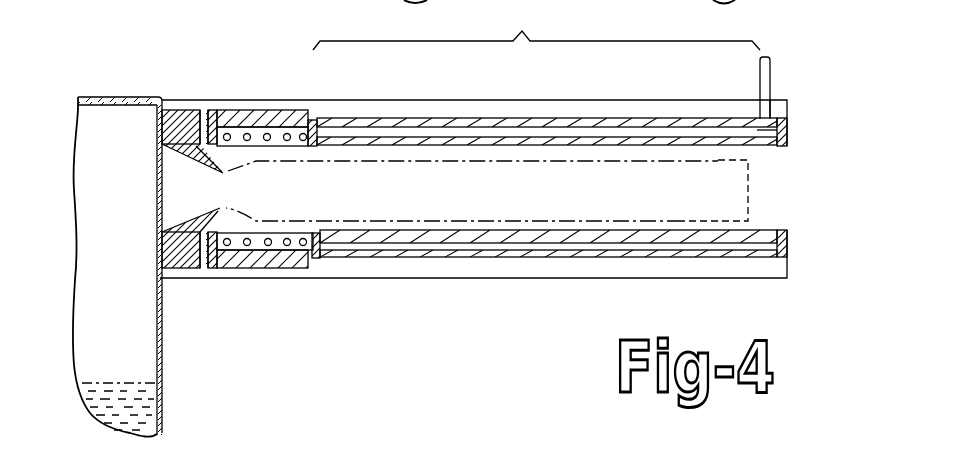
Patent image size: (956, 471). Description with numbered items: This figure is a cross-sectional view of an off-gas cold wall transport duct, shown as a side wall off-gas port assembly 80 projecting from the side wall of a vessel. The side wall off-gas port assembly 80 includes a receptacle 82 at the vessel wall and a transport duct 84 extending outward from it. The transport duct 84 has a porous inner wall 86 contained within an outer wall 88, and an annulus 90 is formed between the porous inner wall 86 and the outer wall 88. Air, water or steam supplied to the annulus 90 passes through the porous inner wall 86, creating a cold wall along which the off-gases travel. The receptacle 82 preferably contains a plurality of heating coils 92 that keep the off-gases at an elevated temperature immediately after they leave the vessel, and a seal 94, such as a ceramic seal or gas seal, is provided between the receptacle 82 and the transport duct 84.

The side wall off-gas port assembly 80 is at (452, 304).
The receptacle 82 is at (262, 116).
The transport duct 84 is at (536, 28).
The porous inner wall 86 is at (676, 146).
The outer wall 88 is at (705, 113).
The annulus 90 is at (777, 130).
The heating coils 92 is at (282, 244).
The seal 94 is at (321, 250).